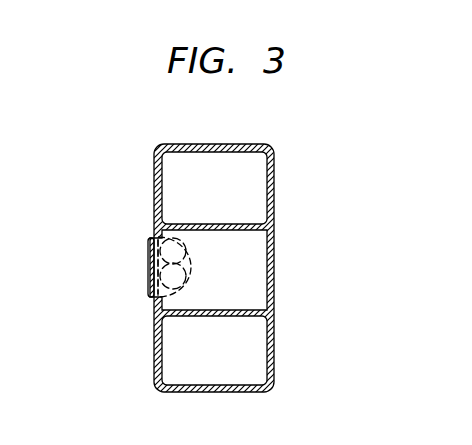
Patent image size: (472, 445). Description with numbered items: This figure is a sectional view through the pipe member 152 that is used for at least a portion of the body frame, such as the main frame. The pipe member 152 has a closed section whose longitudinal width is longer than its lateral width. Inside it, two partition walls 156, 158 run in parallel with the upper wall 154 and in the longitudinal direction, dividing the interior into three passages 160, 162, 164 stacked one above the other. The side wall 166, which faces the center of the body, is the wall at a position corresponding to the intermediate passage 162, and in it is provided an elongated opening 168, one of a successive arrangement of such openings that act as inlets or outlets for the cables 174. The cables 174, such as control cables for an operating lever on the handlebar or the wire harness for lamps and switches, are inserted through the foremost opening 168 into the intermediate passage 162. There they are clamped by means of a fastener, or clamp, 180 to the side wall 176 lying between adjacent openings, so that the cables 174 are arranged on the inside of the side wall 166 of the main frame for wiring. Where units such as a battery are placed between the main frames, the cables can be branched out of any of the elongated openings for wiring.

The pipe member 152 is at (272, 138).
The upper wall 154 is at (181, 146).
The partition wall 156 is at (209, 224).
The partition wall 158 is at (218, 313).
The passage 160 is at (257, 187).
The intermediate passage 162 is at (253, 284).
The passage 164 is at (253, 357).
The side wall 166 is at (160, 198).
The elongated opening 168 is at (151, 244).
The cable 174 is at (181, 276).
The side wall 176 is at (151, 290).
The fastener (clamp) 180 is at (150, 255).